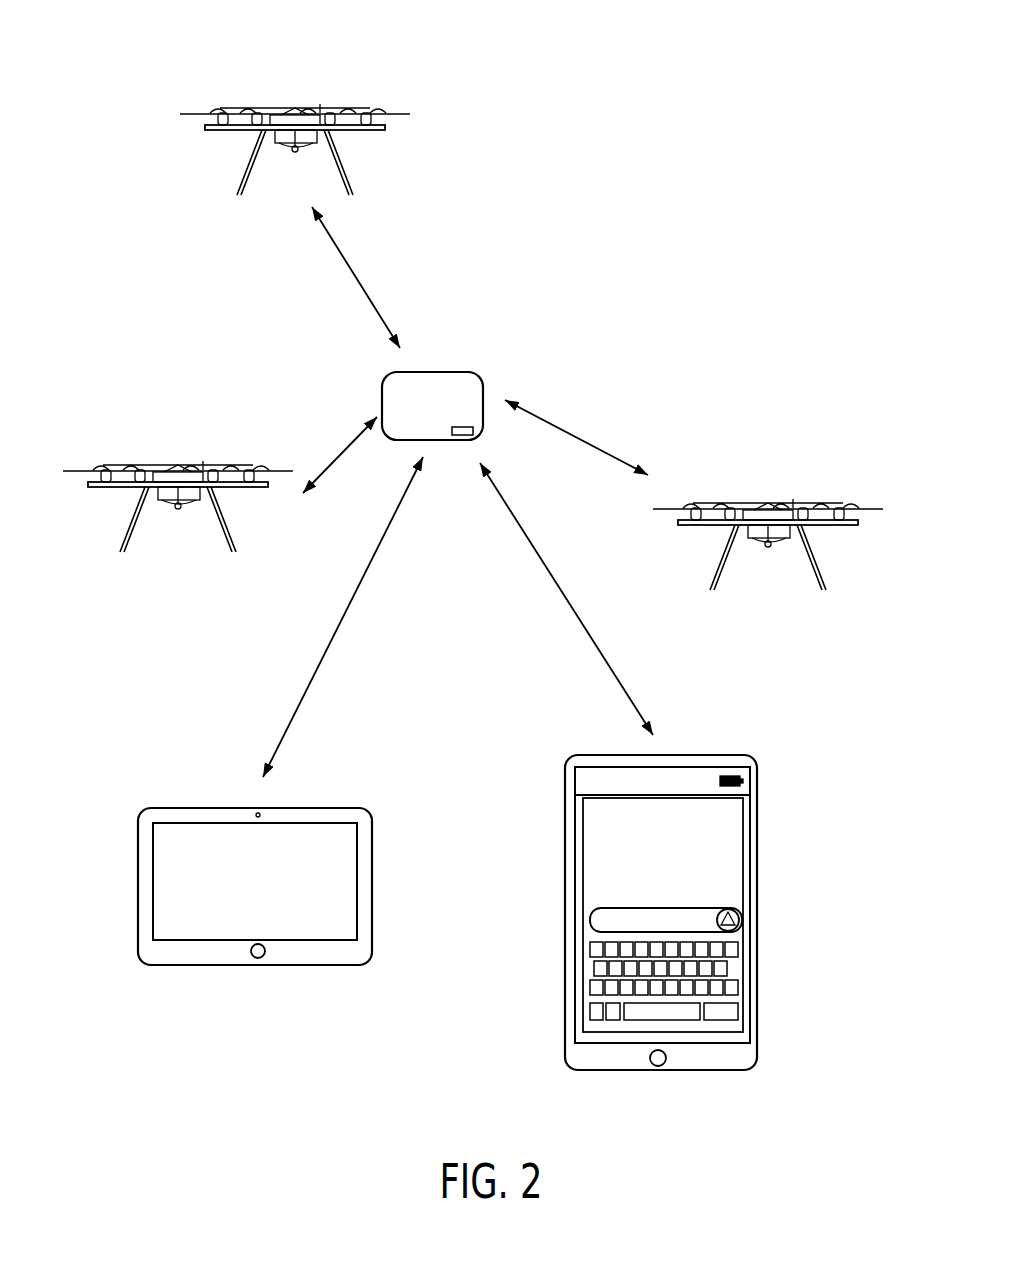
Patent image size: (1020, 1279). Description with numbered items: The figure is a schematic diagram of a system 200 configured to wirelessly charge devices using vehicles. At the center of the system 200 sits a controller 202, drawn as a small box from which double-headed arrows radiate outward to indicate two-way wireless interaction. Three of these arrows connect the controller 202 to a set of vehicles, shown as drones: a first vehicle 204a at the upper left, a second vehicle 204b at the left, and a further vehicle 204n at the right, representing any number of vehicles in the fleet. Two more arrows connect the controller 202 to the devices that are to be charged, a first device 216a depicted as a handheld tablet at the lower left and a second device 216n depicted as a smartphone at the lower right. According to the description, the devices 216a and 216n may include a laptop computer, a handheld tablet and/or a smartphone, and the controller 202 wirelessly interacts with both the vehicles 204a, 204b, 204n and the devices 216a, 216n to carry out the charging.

The system 200 is at (768, 130).
The controller 202 is at (460, 362).
The vehicle 204a is at (383, 97).
The vehicle 204b is at (123, 440).
The vehicle 204n is at (787, 485).
The device 216a is at (331, 783).
The device 216n is at (730, 750).